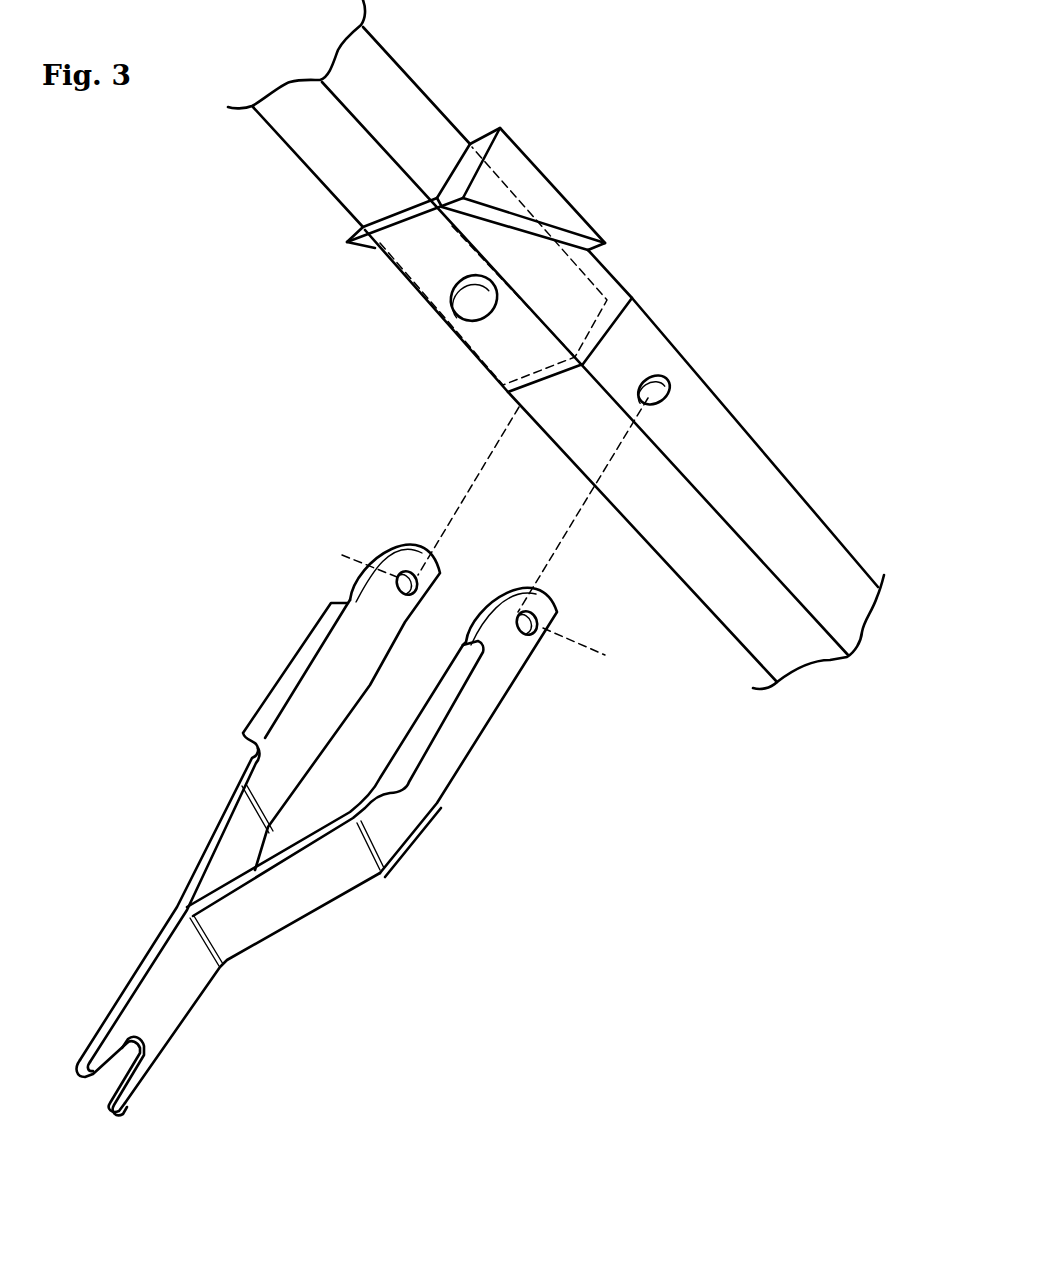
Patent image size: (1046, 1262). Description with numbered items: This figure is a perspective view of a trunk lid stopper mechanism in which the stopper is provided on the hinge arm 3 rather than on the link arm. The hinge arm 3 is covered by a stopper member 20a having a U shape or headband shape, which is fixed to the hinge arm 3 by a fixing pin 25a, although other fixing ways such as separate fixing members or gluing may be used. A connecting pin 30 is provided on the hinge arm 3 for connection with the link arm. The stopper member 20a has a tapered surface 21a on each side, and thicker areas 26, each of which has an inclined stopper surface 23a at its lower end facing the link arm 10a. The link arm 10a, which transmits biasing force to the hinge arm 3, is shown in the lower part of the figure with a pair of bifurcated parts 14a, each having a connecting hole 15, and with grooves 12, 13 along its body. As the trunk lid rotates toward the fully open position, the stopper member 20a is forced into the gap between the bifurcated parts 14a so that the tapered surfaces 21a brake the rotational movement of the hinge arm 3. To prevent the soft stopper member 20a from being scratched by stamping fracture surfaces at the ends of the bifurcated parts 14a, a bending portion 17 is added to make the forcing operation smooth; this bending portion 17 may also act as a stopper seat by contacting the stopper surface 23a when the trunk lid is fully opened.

The hinge arm 3 is at (763, 493).
The stopper member 20a is at (503, 227).
The tapered surface 21a is at (572, 295).
The stopper surface 23a is at (527, 228).
The fixing pin 25a is at (468, 307).
The thicker area 26 is at (510, 157).
The connecting pin 30 is at (662, 378).
The link arm 10a is at (342, 792).
The groove 12 is at (165, 1018).
The groove 13 is at (127, 1082).
The bifurcated part 14a is at (380, 598).
The connecting hole 15 is at (408, 573).
The bending portion 17 is at (295, 675).